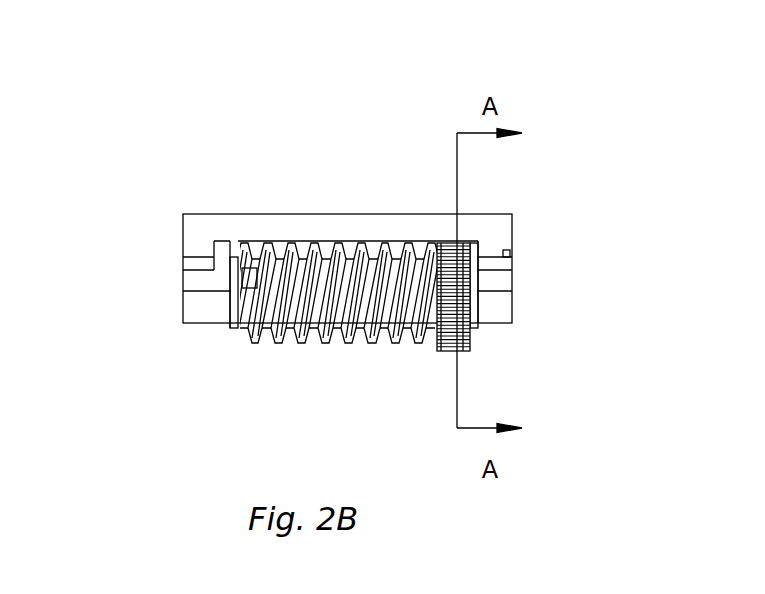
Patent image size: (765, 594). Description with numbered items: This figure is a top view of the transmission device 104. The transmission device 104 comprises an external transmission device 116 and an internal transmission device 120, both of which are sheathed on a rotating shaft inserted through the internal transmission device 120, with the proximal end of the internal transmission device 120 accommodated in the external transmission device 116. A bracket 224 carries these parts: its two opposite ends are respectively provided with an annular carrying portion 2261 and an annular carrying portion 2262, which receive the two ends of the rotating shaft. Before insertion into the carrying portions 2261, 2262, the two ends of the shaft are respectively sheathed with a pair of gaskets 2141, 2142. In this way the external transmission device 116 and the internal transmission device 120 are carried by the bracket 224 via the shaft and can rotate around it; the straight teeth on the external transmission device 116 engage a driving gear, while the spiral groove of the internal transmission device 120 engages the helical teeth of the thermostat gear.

The transmission device 104 is at (149, 147).
The internal transmission device 120 is at (293, 242).
The bracket 224 is at (360, 224).
The external transmission device 116 is at (451, 243).
The gasket 2142 is at (482, 253).
The gasket 2141 is at (231, 330).
The annular carrying portion 2261 is at (185, 295).
The annular carrying portion 2262 is at (502, 300).